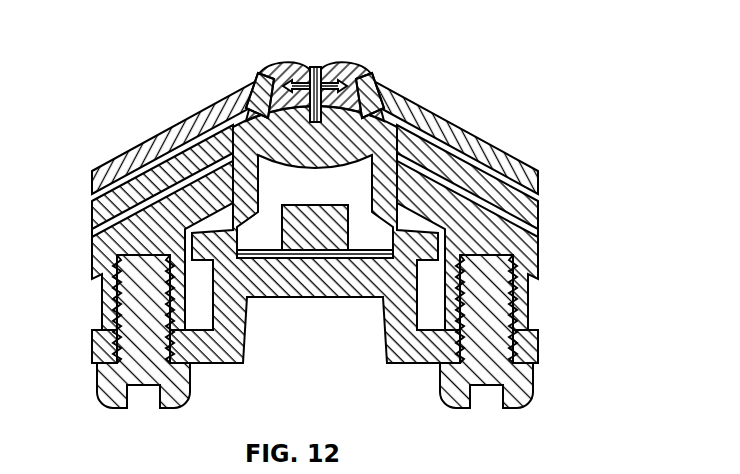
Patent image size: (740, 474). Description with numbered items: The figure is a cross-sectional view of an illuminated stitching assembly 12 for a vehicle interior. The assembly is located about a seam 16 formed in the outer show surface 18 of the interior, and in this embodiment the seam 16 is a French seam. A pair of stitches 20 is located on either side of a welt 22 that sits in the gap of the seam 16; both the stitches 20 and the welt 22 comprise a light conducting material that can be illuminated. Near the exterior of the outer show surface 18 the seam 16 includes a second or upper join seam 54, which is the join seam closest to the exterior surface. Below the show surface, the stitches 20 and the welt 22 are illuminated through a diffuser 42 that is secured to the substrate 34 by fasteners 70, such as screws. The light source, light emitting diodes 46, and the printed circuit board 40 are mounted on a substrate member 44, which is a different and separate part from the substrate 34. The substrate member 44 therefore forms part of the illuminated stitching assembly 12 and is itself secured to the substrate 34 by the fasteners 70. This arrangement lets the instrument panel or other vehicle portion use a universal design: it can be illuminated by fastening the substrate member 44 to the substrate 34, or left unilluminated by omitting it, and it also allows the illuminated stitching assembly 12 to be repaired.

The illuminated stitching assembly 12 is at (565, 51).
The seam 16 is at (313, 50).
The outer show surface 18 is at (487, 153).
The stitches 20 is at (272, 107).
The welt 22 is at (322, 63).
The substrate 34 is at (520, 257).
The printed circuit board 40 is at (392, 252).
The diffuser 42 is at (407, 107).
The substrate member 44 is at (296, 272).
The light emitting diodes 46 is at (340, 235).
The upper join seam 54 is at (296, 62).
The fasteners 70 is at (110, 390).